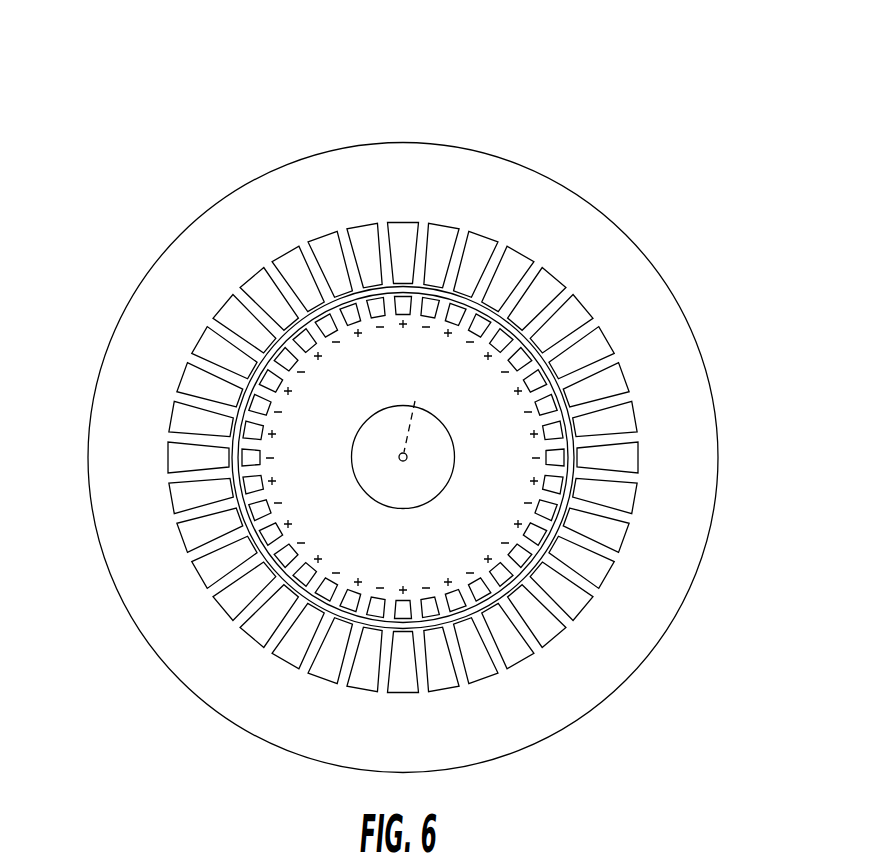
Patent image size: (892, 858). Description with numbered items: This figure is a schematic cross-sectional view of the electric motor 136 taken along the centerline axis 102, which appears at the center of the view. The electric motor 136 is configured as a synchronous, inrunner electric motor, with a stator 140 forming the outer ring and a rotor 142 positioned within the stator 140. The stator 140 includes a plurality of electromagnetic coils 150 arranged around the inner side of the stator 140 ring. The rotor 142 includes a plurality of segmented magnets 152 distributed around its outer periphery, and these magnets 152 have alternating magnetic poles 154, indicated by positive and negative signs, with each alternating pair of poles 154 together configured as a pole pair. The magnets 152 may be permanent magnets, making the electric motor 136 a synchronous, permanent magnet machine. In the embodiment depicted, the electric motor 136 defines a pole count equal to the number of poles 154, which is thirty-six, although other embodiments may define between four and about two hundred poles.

The electric motor 136 is at (648, 68).
The stator 140 is at (355, 170).
The electromagnetic coils 150 is at (437, 222).
The rotor 142 is at (347, 523).
The segmented magnets 152 is at (278, 360).
The magnetic poles 154 is at (306, 457).
The centerline axis 102 is at (415, 401).